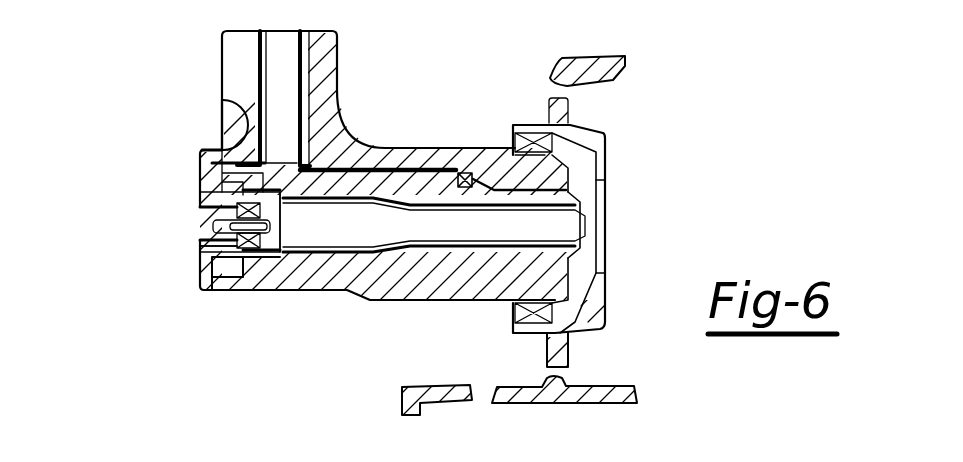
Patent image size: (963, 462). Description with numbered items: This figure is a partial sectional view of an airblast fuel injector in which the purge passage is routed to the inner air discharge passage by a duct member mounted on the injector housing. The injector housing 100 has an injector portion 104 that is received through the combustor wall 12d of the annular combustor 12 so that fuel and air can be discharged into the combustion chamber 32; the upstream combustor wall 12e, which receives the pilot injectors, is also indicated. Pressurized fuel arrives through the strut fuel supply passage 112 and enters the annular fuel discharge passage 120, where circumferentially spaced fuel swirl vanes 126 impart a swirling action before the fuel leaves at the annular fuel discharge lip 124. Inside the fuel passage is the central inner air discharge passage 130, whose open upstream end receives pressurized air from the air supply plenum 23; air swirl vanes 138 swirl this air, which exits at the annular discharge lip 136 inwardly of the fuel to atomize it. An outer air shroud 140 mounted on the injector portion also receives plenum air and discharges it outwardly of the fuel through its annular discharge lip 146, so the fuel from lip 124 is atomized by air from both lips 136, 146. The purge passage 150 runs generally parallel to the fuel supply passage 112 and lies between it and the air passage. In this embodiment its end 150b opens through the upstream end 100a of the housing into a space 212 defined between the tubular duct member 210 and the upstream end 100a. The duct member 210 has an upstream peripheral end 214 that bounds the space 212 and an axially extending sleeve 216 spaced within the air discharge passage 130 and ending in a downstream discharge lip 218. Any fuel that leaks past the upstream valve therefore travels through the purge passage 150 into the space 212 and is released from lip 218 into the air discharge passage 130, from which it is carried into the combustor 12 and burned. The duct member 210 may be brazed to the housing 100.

The injector housing 100 is at (233, 42).
The upstream end of the injector housing 100a is at (234, 129).
The injector portion 104 is at (404, 302).
The strut fuel supply passage 112 is at (312, 52).
The annular fuel discharge passage 120 is at (450, 172).
The annular fuel discharge lip 124 is at (573, 228).
The fuel swirl vanes 126 is at (460, 172).
The inner air discharge passage 130 is at (429, 225).
The annular discharge lip 136 is at (575, 236).
The air swirl vanes 138 is at (272, 266).
The outer air shroud 140 is at (612, 130).
The annular discharge lip 146 is at (605, 195).
The purge passage 150 is at (268, 50).
The end of the purge passage 150b is at (232, 112).
The annular combustor 12 is at (587, 52).
The combustor wall 12d is at (573, 347).
The upstream combustor wall 12e is at (402, 397).
The tubular duct member 210 is at (225, 226).
The space 212 is at (224, 181).
The upstream peripheral end 214 is at (205, 269).
The axially extending sleeve 216 is at (221, 245).
The downstream discharge lip 218 is at (290, 225).
The air supply plenum 23 is at (112, 171).
The combustion chamber 32 is at (755, 234).